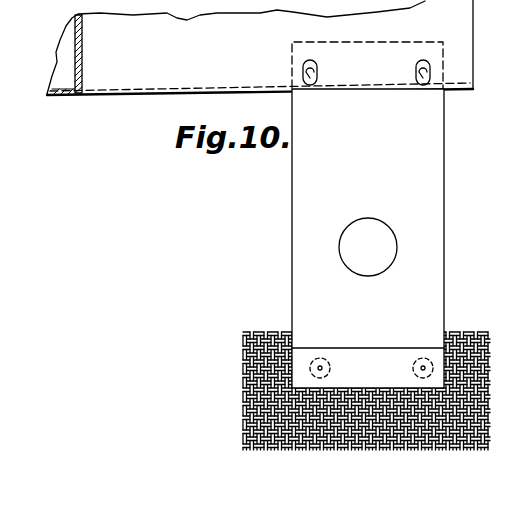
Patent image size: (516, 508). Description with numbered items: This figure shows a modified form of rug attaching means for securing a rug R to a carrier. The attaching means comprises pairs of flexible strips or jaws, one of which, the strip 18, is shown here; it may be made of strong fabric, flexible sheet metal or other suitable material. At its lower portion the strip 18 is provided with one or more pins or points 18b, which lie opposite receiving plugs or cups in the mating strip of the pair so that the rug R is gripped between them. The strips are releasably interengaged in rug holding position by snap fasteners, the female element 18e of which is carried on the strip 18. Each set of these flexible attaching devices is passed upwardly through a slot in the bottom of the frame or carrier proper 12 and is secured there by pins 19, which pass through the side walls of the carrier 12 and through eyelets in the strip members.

The frame or carrier proper 12 is at (463, 41).
The flexible strip or jaw 18 is at (307, 287).
The female snap fastener element 18e is at (350, 244).
The pins or points 18b is at (424, 357).
The pins 19 is at (411, 96).
The rug R is at (370, 427).